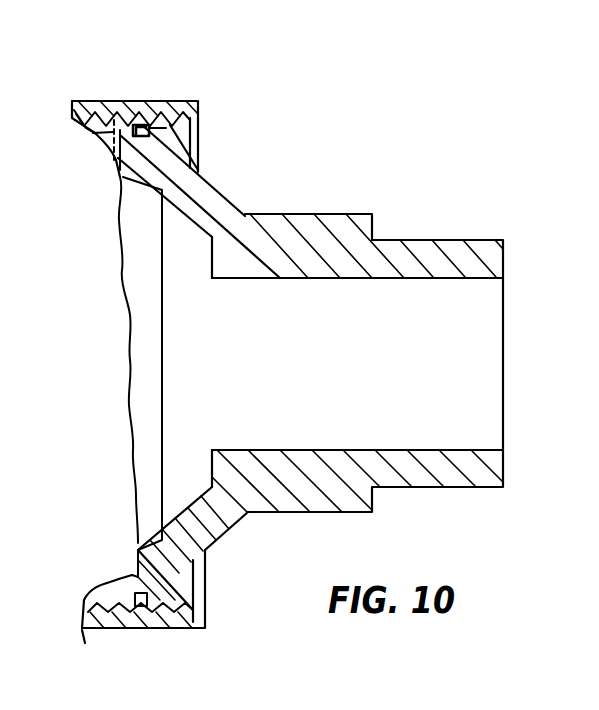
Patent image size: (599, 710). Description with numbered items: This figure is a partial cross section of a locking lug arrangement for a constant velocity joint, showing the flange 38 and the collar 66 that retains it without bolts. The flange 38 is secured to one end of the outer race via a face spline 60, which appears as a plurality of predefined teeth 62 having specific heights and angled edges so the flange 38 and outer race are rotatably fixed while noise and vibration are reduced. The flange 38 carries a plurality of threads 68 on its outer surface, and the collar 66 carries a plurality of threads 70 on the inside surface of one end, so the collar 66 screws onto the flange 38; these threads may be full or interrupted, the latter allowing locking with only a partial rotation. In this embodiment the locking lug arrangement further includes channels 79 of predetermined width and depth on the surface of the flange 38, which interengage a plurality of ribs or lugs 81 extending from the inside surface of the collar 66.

The flange 38 is at (284, 232).
The face spline 60 is at (111, 595).
The teeth 62 is at (126, 120).
The collar 66 is at (119, 125).
The threads 68 is at (191, 614).
The threads 70 is at (176, 105).
The channels 79 is at (139, 115).
The ribs or lugs 81 is at (131, 125).